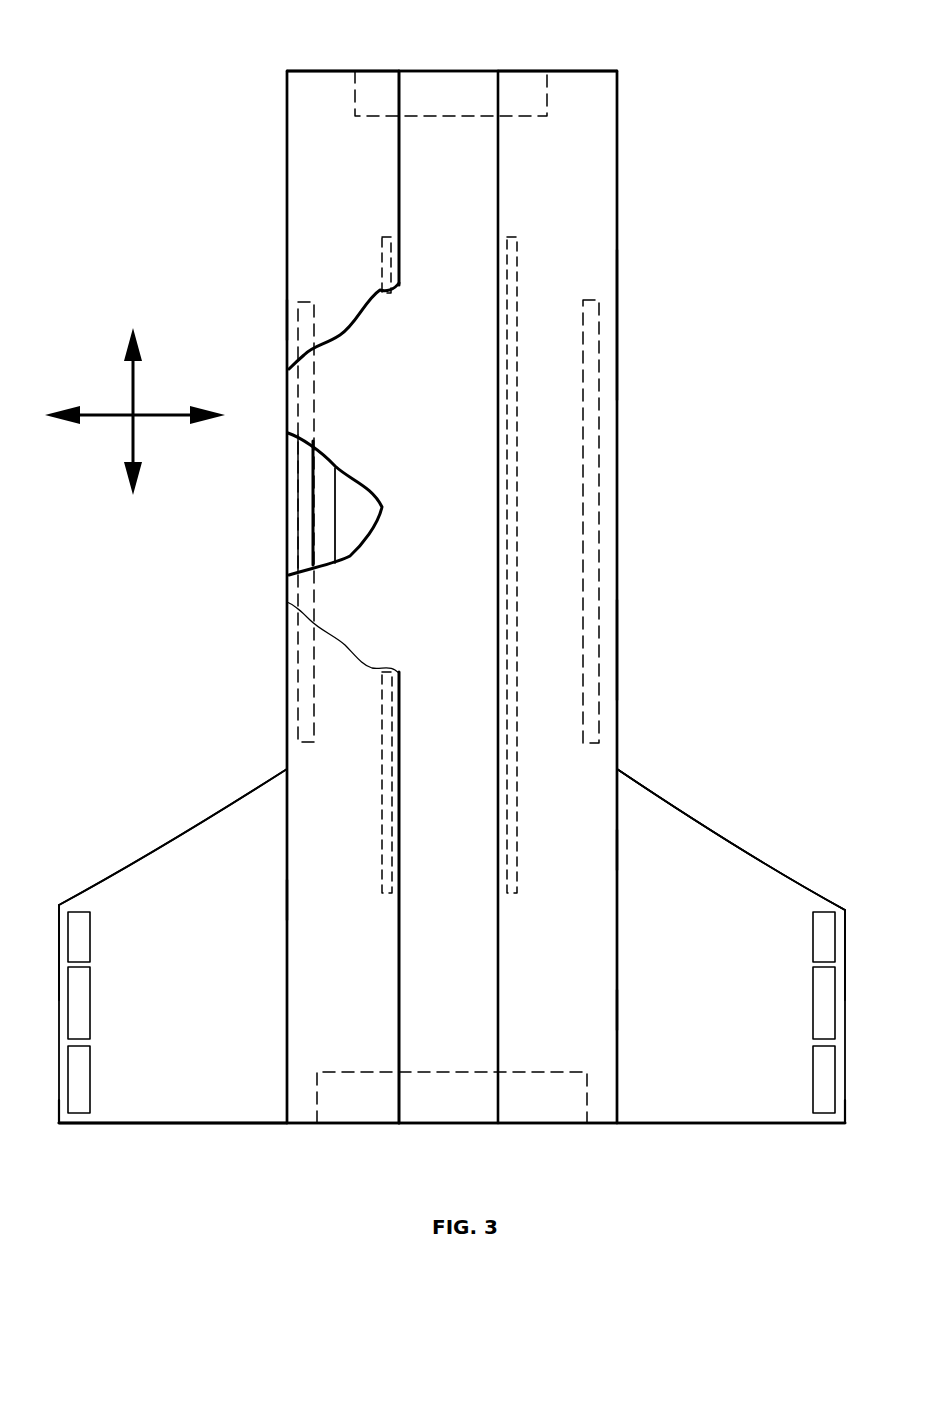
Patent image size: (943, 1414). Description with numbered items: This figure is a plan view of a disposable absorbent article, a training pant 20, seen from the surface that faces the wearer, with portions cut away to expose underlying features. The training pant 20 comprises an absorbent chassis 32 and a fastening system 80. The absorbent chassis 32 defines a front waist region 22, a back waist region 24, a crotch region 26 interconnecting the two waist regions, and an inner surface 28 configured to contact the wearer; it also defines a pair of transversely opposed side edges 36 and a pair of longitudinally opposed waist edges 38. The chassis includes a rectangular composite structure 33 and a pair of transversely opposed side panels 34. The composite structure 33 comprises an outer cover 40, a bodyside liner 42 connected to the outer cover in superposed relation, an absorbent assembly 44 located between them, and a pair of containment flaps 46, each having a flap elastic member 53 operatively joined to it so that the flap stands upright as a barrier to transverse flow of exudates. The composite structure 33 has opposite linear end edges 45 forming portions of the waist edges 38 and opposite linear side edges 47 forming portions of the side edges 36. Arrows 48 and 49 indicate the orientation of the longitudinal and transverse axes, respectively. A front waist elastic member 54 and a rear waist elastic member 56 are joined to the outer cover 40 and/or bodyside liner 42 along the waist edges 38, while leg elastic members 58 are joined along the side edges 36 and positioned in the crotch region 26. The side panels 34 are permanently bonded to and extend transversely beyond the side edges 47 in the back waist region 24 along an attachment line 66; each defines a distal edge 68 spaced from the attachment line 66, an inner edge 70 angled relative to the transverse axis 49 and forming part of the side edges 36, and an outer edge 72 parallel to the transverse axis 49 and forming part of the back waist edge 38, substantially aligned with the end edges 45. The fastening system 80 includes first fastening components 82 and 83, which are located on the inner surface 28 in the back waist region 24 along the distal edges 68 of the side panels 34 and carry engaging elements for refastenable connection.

The training pant 20 is at (186, 141).
The front waist region 22 is at (653, 165).
The back waist region 24 is at (761, 817).
The crotch region 26 is at (661, 655).
The inner surface 28 is at (596, 250).
The absorbent chassis 32 is at (287, 260).
The composite structure 33 is at (287, 318).
The side panels 34 is at (165, 845).
The side edges 36 is at (251, 784).
The waist edges 38 is at (337, 71).
The outer cover 40 is at (332, 470).
The bodyside liner 42 is at (417, 390).
The absorbent assembly 44 is at (352, 532).
The linear end edges 45 is at (577, 71).
The containment flaps 46 is at (385, 175).
The linear side edges 47 is at (290, 637).
The longitudinal axis arrow 48 is at (134, 382).
The transverse axis arrow 49 is at (172, 412).
The flap elastic member 53 is at (398, 250).
The front waist elastic member 54 is at (450, 90).
The rear waist elastic member 56 is at (550, 1100).
The leg elastic members 58 is at (300, 480).
The attachment line 66 is at (287, 897).
The distal edge 68 is at (60, 1098).
The inner edges 70 is at (675, 806).
The outer edges 72 is at (172, 1125).
The fastening system 80 is at (102, 933).
The first fastening component 82 is at (58, 932).
The first fastening component 83 is at (843, 932).